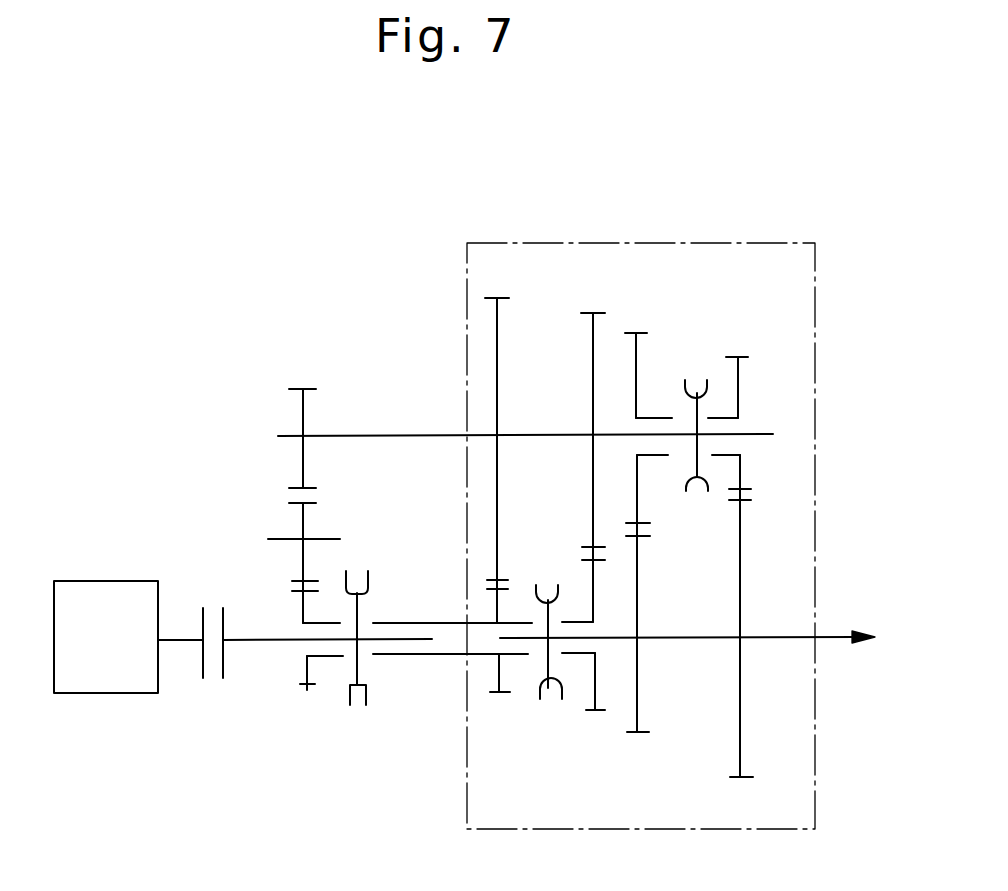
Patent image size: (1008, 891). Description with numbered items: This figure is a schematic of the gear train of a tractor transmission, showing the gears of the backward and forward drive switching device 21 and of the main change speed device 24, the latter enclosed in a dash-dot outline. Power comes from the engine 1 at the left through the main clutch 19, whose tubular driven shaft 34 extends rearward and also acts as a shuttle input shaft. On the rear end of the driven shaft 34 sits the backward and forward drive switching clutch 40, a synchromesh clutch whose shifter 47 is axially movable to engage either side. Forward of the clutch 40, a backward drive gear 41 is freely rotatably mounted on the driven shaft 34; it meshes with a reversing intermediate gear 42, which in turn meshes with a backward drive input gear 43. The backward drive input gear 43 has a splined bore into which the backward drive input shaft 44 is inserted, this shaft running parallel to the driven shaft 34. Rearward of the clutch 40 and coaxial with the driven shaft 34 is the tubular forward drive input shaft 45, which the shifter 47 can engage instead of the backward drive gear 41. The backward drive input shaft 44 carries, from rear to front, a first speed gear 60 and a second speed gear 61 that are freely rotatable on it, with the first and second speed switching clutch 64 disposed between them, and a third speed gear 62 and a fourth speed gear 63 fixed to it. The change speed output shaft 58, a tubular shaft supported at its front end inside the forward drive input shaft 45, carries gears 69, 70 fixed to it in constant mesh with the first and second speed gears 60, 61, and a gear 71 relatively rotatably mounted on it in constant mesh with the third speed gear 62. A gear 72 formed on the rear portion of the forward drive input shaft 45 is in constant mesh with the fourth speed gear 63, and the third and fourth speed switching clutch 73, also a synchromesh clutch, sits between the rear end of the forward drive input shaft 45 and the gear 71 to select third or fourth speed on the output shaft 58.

The engine 1 is at (105, 588).
The main clutch 19 is at (207, 689).
The backward and forward drive switching device 21 is at (381, 295).
The main change speed device 24 is at (668, 243).
The driven shaft 34 is at (257, 643).
The backward and forward drive switching clutch 40 is at (363, 735).
The backward drive gear 41 is at (307, 690).
The reversing intermediate gear 42 is at (300, 520).
The backward drive input gear 43 is at (300, 410).
The backward drive input shaft 44 is at (412, 434).
The forward drive input shaft 45 is at (418, 622).
The shifter 47 is at (366, 690).
The change speed output shaft 58 is at (840, 636).
The first speed gear 60 is at (738, 375).
The second speed gear 61 is at (636, 335).
The third speed gear 62 is at (593, 311).
The fourth speed gear 63 is at (497, 296).
The first and second speed switching clutch 64 is at (713, 356).
The gear 69 is at (741, 695).
The gear 70 is at (647, 733).
The gear 71 is at (596, 712).
The gear 72 is at (500, 695).
The third and fourth speed switching clutch 73 is at (555, 723).